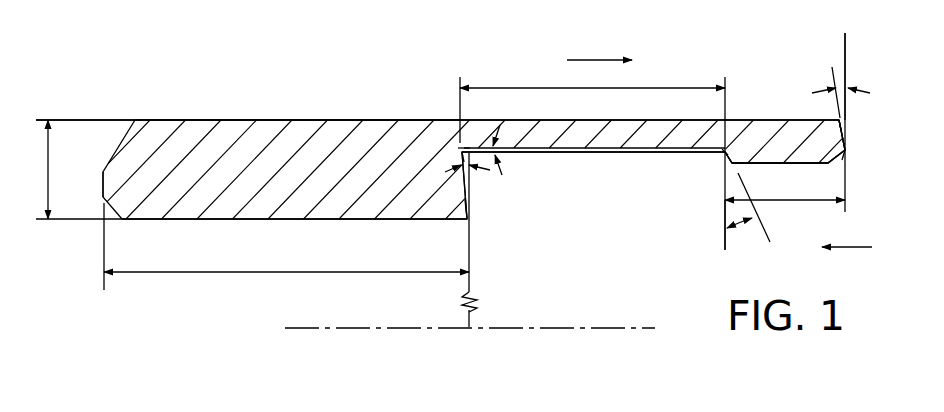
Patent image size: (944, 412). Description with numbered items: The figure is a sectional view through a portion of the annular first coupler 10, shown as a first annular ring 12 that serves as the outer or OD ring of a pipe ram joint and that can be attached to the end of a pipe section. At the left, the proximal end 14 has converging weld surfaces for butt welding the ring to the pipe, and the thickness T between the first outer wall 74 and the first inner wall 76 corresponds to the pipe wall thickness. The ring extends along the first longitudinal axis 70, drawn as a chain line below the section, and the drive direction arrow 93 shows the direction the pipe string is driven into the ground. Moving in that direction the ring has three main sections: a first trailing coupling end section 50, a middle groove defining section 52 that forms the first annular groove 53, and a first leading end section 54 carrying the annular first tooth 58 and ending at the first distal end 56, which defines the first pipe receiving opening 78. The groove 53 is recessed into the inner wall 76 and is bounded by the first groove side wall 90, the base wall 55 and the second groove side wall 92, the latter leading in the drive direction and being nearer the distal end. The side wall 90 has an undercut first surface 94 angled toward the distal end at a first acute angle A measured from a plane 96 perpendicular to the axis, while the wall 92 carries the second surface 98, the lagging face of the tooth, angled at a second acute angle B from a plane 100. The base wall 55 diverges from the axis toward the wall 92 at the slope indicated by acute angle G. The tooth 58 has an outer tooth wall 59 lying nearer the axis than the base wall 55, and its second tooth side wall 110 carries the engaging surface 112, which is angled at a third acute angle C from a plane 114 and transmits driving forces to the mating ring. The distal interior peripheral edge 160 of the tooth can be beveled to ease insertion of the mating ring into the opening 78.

The first coupler 10 is at (183, 98).
The first annular ring 12 is at (280, 118).
The proximal end 14 is at (101, 185).
The first trailing coupling end section 50 is at (212, 273).
The middle annular groove defining section 52 is at (672, 86).
The first annular groove 53 is at (567, 168).
The first leading end section 54 is at (786, 202).
The base wall 55 is at (598, 153).
The first distal end 56 is at (833, 160).
The first tooth 58 is at (760, 140).
The outer tooth wall 59 is at (775, 167).
The first longitudinal axis 70 is at (343, 330).
The first outer wall 74 is at (323, 119).
The first inner wall 76 is at (305, 220).
The first pipe receiving opening 78 is at (845, 250).
The first annular groove side wall 90 is at (468, 185).
The second annular groove side wall 92 is at (726, 165).
The drive direction arrow 93 is at (594, 57).
The first surface 94 is at (470, 160).
The plane 96 is at (468, 205).
The second surface 98 is at (726, 152).
The plane 100 is at (724, 240).
The second tooth side wall 110 is at (846, 133).
The first tooth side wall groove wall engaging surface 112 is at (843, 124).
The plane 114 is at (850, 73).
The distal interior peripheral edge 160 is at (844, 165).
The thickness T is at (48, 171).
The first acute angle A is at (460, 148).
The acute angle G is at (465, 148).
The second acute angle B is at (745, 224).
The third acute angle C is at (837, 66).